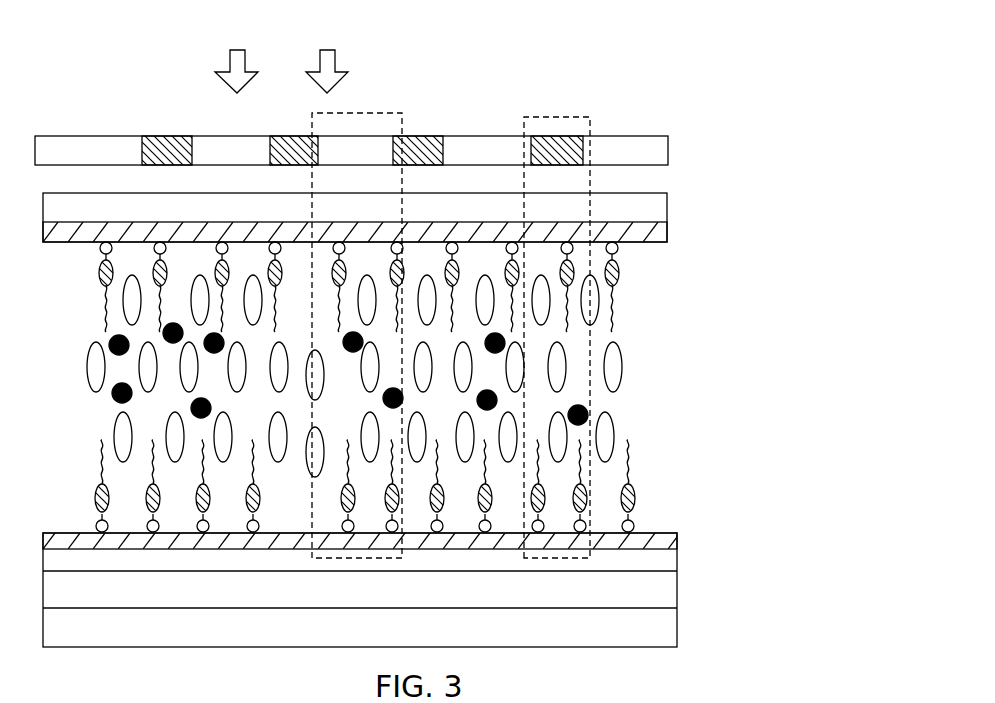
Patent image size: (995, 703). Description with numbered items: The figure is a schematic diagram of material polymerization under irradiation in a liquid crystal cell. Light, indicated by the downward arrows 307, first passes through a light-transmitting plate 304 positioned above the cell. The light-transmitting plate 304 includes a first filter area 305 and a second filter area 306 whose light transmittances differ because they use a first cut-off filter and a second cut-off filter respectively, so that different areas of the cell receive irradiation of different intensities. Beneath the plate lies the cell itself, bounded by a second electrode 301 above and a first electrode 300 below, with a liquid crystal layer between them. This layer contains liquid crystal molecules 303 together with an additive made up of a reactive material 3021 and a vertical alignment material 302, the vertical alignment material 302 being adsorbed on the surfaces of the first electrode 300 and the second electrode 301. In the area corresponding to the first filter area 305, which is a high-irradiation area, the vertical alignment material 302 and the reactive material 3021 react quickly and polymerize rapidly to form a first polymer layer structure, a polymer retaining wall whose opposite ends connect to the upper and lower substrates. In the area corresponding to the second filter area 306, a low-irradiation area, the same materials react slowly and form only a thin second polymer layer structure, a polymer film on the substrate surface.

The first electrode 300 is at (677, 540).
The second electrode 301 is at (667, 236).
The vertical alignment material 302 is at (632, 488).
The reactive material 3021 is at (585, 418).
The liquid crystal molecules 303 is at (620, 370).
The light-transmitting plate 304 is at (668, 150).
The first filter area 305 is at (585, 90).
The second filter area 306 is at (397, 90).
The ultraviolet light irradiation 307 is at (281, 55).